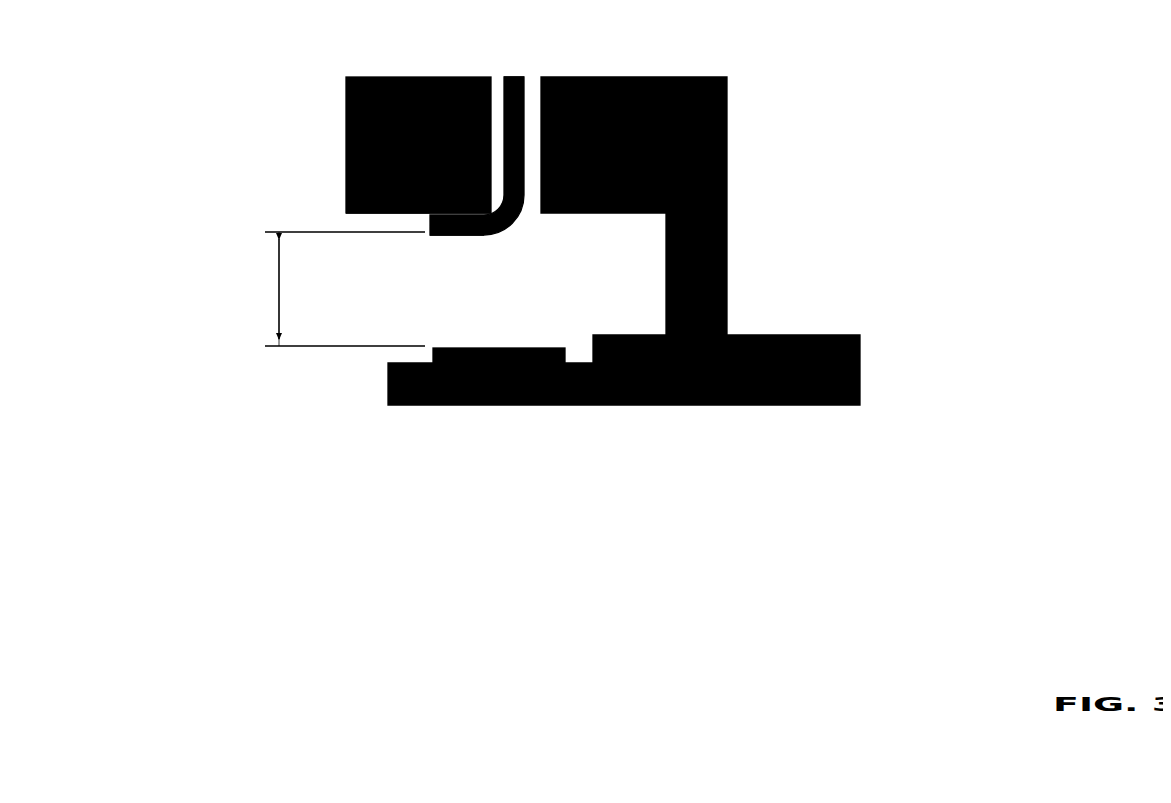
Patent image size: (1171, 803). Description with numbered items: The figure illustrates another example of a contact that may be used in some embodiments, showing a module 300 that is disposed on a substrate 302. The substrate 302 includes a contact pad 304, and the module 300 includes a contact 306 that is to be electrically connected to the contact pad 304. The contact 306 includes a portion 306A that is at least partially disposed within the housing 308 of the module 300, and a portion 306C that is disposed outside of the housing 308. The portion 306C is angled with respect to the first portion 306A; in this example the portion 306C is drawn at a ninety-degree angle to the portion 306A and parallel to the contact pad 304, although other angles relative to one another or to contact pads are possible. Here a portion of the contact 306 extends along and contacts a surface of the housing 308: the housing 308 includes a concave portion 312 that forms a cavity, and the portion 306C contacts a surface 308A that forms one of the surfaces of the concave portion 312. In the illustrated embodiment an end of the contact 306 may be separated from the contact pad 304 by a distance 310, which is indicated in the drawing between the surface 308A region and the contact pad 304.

The module 300 is at (722, 88).
The substrate 302 is at (373, 380).
The contact pad 304 is at (538, 337).
The contact 306 is at (519, 216).
The portion of the contact 306A is at (507, 68).
The portion of the contact 306C is at (452, 226).
The housing 308 is at (332, 140).
The surface 308A is at (348, 207).
The distance 310 is at (256, 295).
The concave portion 312 is at (353, 303).